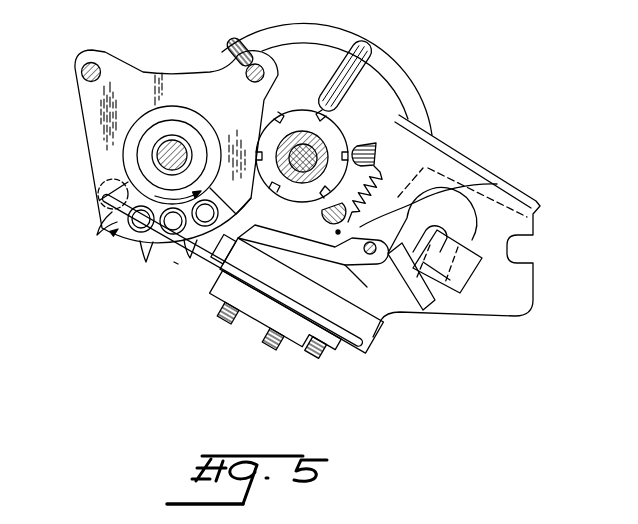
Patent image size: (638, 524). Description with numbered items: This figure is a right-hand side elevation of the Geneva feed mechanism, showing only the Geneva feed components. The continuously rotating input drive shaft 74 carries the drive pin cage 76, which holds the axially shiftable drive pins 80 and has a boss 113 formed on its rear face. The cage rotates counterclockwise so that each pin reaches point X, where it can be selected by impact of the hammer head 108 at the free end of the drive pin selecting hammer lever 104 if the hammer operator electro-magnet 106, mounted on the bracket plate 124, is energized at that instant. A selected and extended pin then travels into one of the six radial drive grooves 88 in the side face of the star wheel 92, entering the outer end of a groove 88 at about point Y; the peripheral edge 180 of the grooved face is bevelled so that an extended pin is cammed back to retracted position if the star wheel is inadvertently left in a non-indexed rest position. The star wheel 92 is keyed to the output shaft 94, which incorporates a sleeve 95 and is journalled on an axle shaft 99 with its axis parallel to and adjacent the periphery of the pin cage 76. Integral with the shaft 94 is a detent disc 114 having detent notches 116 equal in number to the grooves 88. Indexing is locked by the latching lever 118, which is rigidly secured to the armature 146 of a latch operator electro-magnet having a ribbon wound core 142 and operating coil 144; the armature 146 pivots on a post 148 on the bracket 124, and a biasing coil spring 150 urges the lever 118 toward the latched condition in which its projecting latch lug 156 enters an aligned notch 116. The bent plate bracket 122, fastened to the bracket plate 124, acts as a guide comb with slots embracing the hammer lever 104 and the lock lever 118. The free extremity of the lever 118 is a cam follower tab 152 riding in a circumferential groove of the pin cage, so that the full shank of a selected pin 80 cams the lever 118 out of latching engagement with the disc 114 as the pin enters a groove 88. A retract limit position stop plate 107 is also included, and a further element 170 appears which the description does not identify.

The peripheral edge 180 is at (326, 34).
The star wheel 92 is at (386, 101).
The radial drive groove 88 is at (369, 63).
The retract limit position stop plate 107 is at (94, 148).
The drive pin cage 76 is at (141, 137).
The boss 113 is at (177, 140).
The input drive shaft 74 is at (185, 150).
The pivot 170 is at (107, 222).
The drive pin selecting hammer lever 104 is at (203, 249).
The free end of hammer lever 108 is at (124, 242).
The drive pins 80 is at (144, 252).
The output shaft 94 is at (320, 130).
The detent notches 116 is at (321, 116).
The detent disc 114 is at (328, 134).
The axle shaft 99 is at (290, 148).
The sleeve 95 is at (368, 150).
The biasing coil spring 150 is at (384, 171).
The latch lug 156 is at (338, 232).
The latching lever 118 is at (334, 243).
The post 148 is at (371, 256).
The cam follower tab 152 is at (240, 233).
The bent plate bracket 122 is at (216, 300).
The electro-magnet 106 is at (272, 316).
The hammer operator bracket plate 124 is at (473, 310).
The ribbon wound core 142 is at (458, 232).
The operating coil 144 is at (463, 276).
The armature 146 is at (415, 300).
The point X is at (116, 231).
The point Y is at (176, 263).